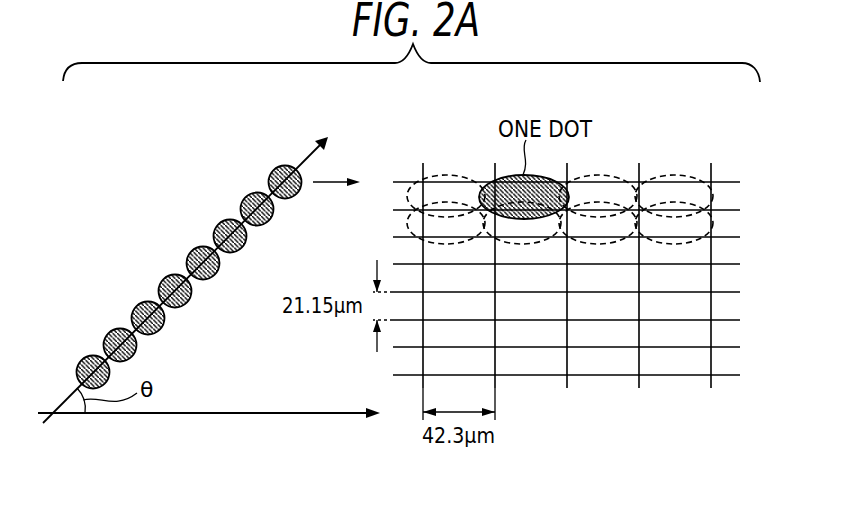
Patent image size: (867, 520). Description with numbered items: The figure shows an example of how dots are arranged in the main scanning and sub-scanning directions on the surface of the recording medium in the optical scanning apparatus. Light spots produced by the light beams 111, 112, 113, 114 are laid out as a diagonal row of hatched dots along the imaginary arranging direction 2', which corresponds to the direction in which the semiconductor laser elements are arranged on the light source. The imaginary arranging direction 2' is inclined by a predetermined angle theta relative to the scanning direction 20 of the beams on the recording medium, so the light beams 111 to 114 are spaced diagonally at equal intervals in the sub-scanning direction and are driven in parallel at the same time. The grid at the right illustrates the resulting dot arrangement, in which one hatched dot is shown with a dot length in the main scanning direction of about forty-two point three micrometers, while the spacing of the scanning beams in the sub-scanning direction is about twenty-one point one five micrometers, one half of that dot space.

The light beam 111 is at (278, 167).
The light beam 112 is at (250, 195).
The light beam 113 is at (222, 222).
The light beam 114 is at (193, 250).
The imaginary arranging direction 2' is at (185, 265).
The scanning direction 20 is at (288, 413).